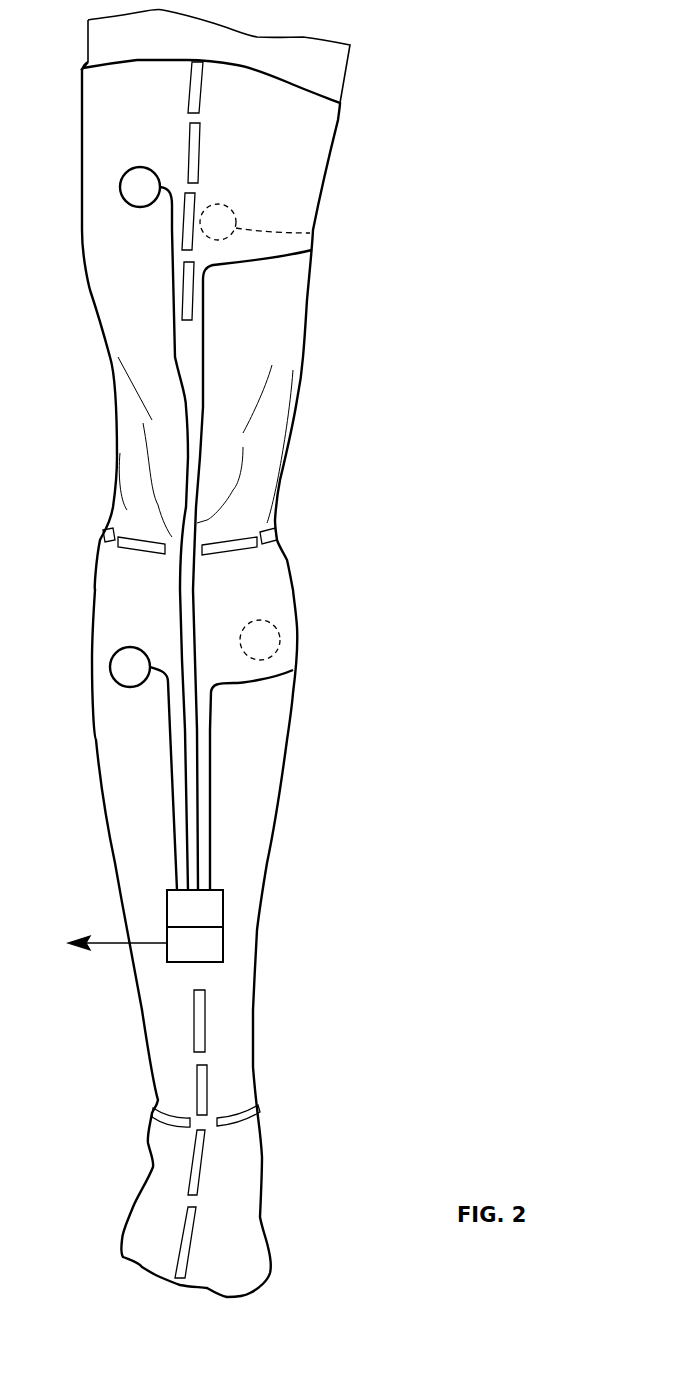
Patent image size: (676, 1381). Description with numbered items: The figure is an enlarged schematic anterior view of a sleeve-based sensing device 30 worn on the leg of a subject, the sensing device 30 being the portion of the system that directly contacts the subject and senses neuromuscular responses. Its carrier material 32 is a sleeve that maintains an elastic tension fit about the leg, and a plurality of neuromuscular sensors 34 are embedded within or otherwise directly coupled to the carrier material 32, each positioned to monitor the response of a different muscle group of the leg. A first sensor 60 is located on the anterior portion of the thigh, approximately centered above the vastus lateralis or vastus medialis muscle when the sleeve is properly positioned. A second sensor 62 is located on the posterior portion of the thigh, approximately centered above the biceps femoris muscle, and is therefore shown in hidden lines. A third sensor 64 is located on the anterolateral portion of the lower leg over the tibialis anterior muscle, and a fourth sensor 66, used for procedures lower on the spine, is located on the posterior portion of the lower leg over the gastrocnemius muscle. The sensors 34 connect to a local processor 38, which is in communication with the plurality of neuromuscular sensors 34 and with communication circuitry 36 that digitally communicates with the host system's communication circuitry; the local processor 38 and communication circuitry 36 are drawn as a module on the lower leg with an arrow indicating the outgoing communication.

The sensing device 30 is at (490, 220).
The carrier material 32 is at (280, 420).
The neuromuscular sensors 34 is at (198, 389).
The communication circuitry 36 is at (223, 940).
The local processor 38 is at (223, 910).
The first sensor 60 is at (140, 177).
The second sensor 62 is at (218, 222).
The third sensor 64 is at (130, 658).
The fourth sensor 66 is at (260, 633).